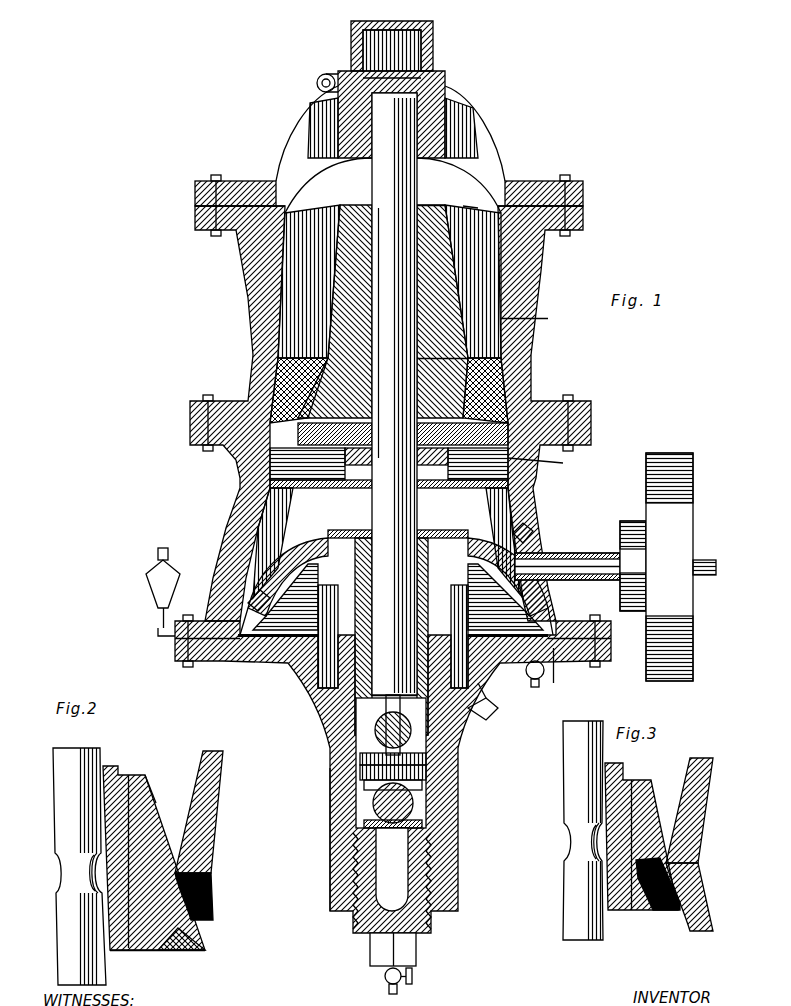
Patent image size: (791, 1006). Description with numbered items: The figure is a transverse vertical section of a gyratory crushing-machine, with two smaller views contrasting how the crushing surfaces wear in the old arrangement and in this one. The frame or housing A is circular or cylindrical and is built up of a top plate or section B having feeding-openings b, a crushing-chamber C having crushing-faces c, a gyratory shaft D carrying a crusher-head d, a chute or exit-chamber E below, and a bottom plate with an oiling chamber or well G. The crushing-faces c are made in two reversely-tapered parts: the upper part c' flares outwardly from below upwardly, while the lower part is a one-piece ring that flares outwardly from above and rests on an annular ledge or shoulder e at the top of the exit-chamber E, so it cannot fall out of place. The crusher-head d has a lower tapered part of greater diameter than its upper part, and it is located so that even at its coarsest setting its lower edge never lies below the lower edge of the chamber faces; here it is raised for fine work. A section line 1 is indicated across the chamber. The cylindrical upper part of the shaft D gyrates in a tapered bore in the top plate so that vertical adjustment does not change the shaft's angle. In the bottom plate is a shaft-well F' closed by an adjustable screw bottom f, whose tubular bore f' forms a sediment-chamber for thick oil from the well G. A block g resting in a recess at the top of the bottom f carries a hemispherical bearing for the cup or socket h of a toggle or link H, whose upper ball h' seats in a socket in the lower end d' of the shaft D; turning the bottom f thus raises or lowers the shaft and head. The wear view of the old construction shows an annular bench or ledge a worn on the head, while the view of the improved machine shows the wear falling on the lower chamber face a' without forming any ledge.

In FIG. 1, the frame or housing A is at (241, 413).
In FIG. 1, the top plate or section B is at (215, 153).
In FIG. 1, the feeding-openings b is at (312, 125).
In FIG. 1, the crushing-chamber C is at (538, 413).
In FIG. 2, the crushing-chamber C is at (171, 780).
In FIG. 3, the crushing-chamber C is at (663, 808).
In FIG. 1, the crushing-faces c is at (531, 319).
In FIG. 1, the upper working-face part c' is at (389, 281).
In FIG. 2, the upper working-face part c' is at (205, 812).
In FIG. 3, the upper working-face part c' is at (693, 810).
In FIG. 1, the section line 1 is at (250, 356).
In FIG. 1, the crusher-head d is at (383, 311).
In FIG. 2, the crusher-head d is at (154, 848).
In FIG. 3, the crusher-head d is at (641, 832).
In FIG. 1, the lower end of shaft d' is at (394, 685).
In FIG. 1, the gyratory shaft D is at (394, 394).
In FIG. 2, the gyratory shaft D is at (45, 876).
In FIG. 3, the gyratory shaft D is at (553, 784).
In FIG. 1, the annular ledge or shoulder e is at (543, 461).
In FIG. 1, the chute or exit-chamber E is at (398, 557).
In FIG. 1, the shaft-well F' is at (393, 774).
In FIG. 1, the oiling chamber or well G is at (306, 813).
In FIG. 1, the toggle or link H is at (418, 760).
In FIG. 1, the cup or socket h is at (361, 780).
In FIG. 1, the ball h' is at (434, 725).
In FIG. 1, the plate or block g is at (393, 839).
In FIG. 1, the openings g' is at (362, 816).
In FIG. 1, the adjustable or screw bottom f is at (400, 881).
In FIG. 1, the bore of bottom f' is at (392, 869).
In FIG. 2, the annular bench or ledge a is at (157, 963).
In FIG. 3, the seat lower extension a' is at (710, 897).